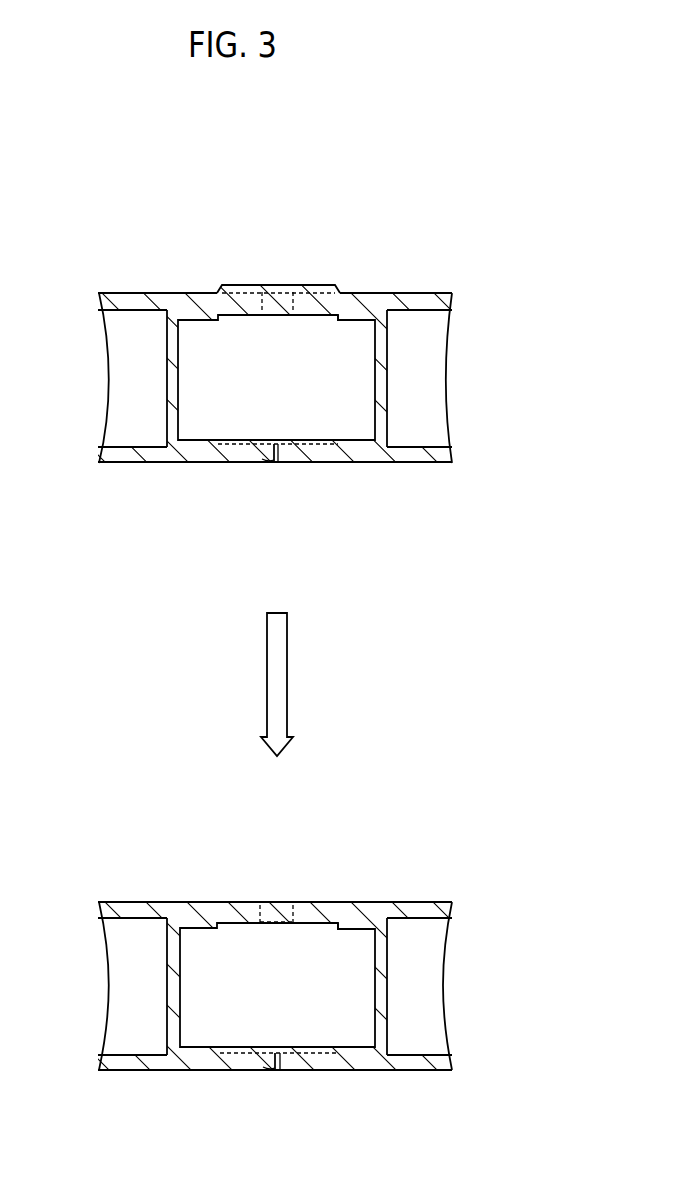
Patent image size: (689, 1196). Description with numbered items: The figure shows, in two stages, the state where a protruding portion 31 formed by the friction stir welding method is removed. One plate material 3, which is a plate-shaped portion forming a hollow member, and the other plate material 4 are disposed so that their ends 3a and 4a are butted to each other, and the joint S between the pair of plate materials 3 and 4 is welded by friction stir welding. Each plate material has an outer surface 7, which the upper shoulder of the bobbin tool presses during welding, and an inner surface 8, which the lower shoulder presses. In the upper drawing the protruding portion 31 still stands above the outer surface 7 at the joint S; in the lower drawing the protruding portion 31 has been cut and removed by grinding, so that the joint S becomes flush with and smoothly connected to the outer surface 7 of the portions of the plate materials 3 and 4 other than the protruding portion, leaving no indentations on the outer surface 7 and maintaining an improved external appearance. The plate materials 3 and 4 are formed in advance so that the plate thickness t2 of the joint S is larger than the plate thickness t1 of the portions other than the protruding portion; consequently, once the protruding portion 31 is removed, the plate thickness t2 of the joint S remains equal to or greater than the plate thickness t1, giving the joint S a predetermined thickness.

The one plate material 3 is at (164, 290).
The end of the one plate material 3a is at (268, 290).
The other plate material 4 is at (440, 287).
The end of the other plate material 4a is at (290, 288).
The outer surface 7 is at (393, 292).
The inner surface 8 is at (346, 321).
The protruding portion 31 is at (313, 288).
The joint S is at (270, 328).
The plate thickness of the portion other than the protruding portion t1 is at (117, 342).
The plate thickness of the joint t2 is at (238, 960).